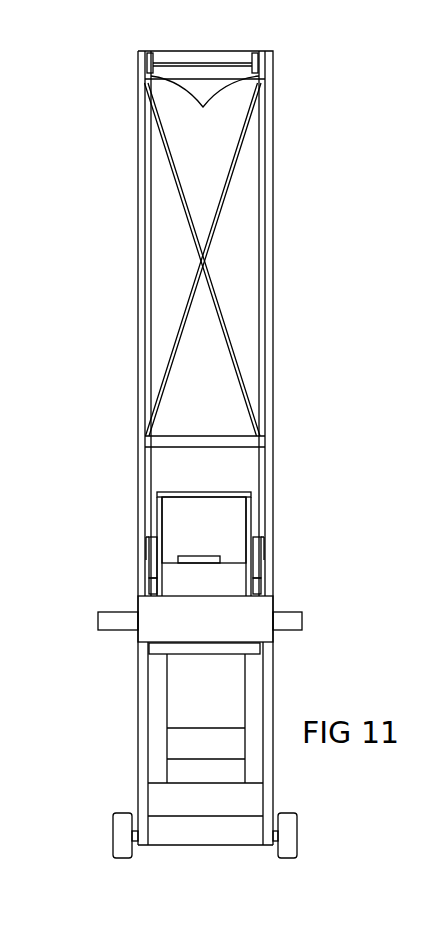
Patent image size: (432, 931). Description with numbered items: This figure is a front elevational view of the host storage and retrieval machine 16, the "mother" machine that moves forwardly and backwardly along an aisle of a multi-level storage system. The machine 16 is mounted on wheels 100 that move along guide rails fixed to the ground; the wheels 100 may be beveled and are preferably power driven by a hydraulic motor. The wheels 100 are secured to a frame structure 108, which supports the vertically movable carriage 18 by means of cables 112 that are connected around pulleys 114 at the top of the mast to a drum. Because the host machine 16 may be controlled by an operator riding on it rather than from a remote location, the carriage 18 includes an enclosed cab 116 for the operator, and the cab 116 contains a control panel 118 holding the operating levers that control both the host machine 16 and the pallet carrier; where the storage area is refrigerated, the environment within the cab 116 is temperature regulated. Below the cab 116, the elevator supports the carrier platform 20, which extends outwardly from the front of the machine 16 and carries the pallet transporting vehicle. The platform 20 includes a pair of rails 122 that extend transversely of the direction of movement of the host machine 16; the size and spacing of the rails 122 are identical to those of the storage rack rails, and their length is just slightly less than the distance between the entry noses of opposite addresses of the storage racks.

The host storage and retrieval machine 16 is at (322, 317).
The vertically movable carriage 18 is at (292, 459).
The carrier platform 20 is at (273, 599).
The wheels 100 is at (112, 820).
The frame structure 108 is at (207, 838).
The cables 112 is at (255, 160).
The pulleys 114 is at (203, 92).
The enclosed cab 116 is at (180, 492).
The control panel 118 is at (198, 556).
The rails 122 is at (110, 612).